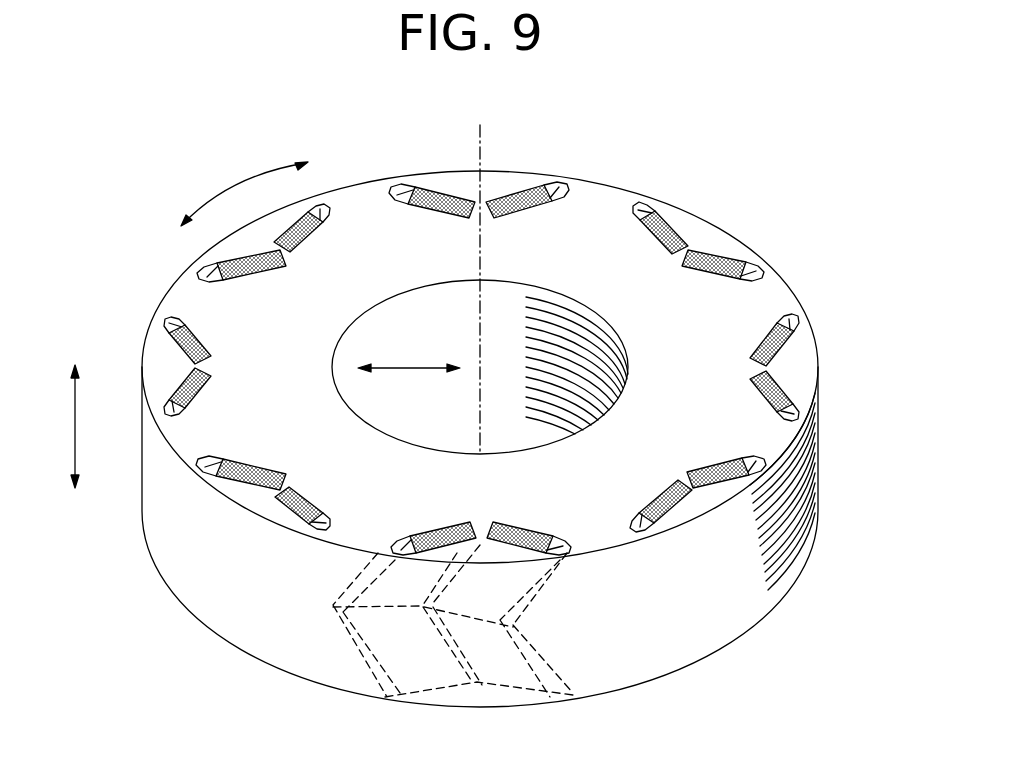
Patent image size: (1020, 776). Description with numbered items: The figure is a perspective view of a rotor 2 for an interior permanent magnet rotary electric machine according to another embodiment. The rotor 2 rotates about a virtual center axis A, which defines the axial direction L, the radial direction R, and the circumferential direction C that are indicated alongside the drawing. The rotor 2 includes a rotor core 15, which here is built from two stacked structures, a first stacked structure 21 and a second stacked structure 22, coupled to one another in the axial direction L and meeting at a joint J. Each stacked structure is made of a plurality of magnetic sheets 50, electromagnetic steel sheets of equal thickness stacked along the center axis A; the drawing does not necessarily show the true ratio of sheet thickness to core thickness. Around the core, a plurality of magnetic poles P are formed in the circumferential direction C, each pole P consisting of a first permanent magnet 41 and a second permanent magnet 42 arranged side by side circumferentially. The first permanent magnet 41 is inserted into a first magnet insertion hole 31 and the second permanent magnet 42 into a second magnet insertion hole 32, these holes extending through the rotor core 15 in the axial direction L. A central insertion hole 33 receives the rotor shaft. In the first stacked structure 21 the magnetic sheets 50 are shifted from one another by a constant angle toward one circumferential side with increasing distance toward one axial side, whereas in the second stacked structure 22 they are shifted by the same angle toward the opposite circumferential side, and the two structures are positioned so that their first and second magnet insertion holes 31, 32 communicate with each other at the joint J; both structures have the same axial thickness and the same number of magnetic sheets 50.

The rotor 2 is at (785, 141).
The rotor core 15 is at (596, 180).
The first stacked structure 21 is at (787, 280).
The second stacked structure 22 is at (762, 633).
The first magnet insertion hole 31 is at (405, 543).
The second magnet insertion hole 32 is at (560, 543).
The insertion hole 33 is at (336, 368).
The first permanent magnet 41 is at (432, 530).
The second permanent magnet 42 is at (510, 530).
The magnetic sheet 50 is at (552, 297).
The center axis A is at (480, 272).
The magnetic pole P is at (297, 263).
The joint J is at (325, 614).
The circumferential direction C is at (249, 197).
The axial direction L is at (72, 426).
The radial direction R is at (409, 352).